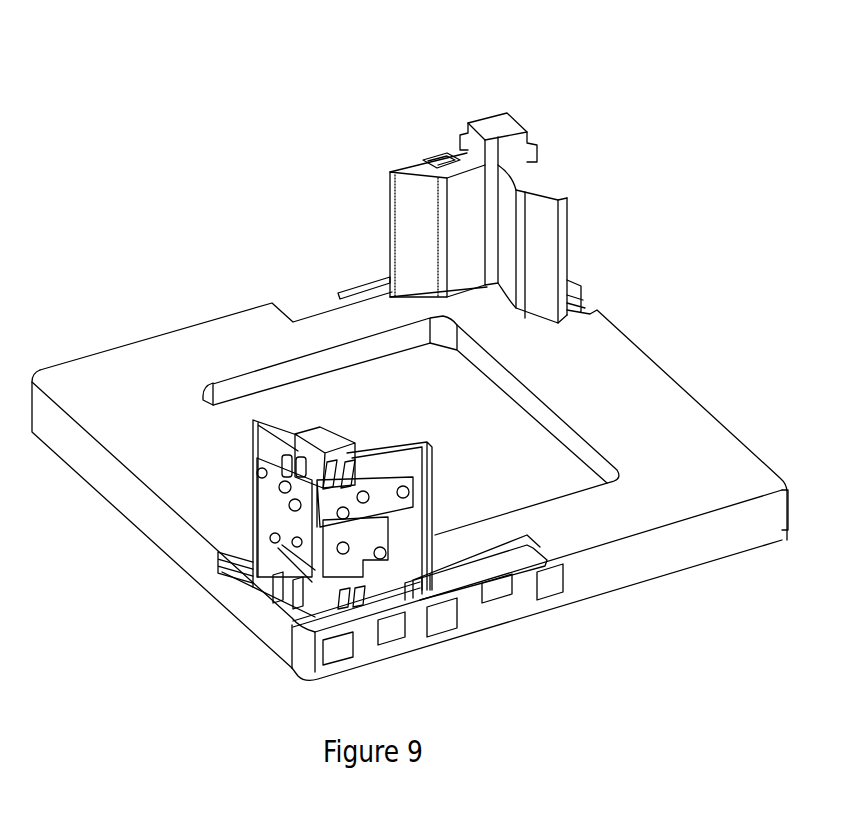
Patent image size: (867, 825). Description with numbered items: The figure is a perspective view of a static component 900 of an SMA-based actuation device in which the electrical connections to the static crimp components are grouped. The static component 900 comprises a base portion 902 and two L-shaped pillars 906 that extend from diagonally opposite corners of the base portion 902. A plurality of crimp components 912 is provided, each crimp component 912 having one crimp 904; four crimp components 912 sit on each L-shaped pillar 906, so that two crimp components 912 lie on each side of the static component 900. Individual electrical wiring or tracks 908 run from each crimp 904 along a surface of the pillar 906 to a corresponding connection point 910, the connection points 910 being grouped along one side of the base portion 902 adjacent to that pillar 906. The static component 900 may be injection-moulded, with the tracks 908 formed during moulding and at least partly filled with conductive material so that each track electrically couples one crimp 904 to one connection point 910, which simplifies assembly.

The static component 900 is at (187, 182).
The base portion 902 is at (645, 550).
The crimp 904 is at (363, 462).
The L-shaped pillar 906 is at (497, 128).
The electrical tracks 908 is at (345, 290).
The connection point 910 is at (387, 640).
The crimp component 912 is at (268, 482).